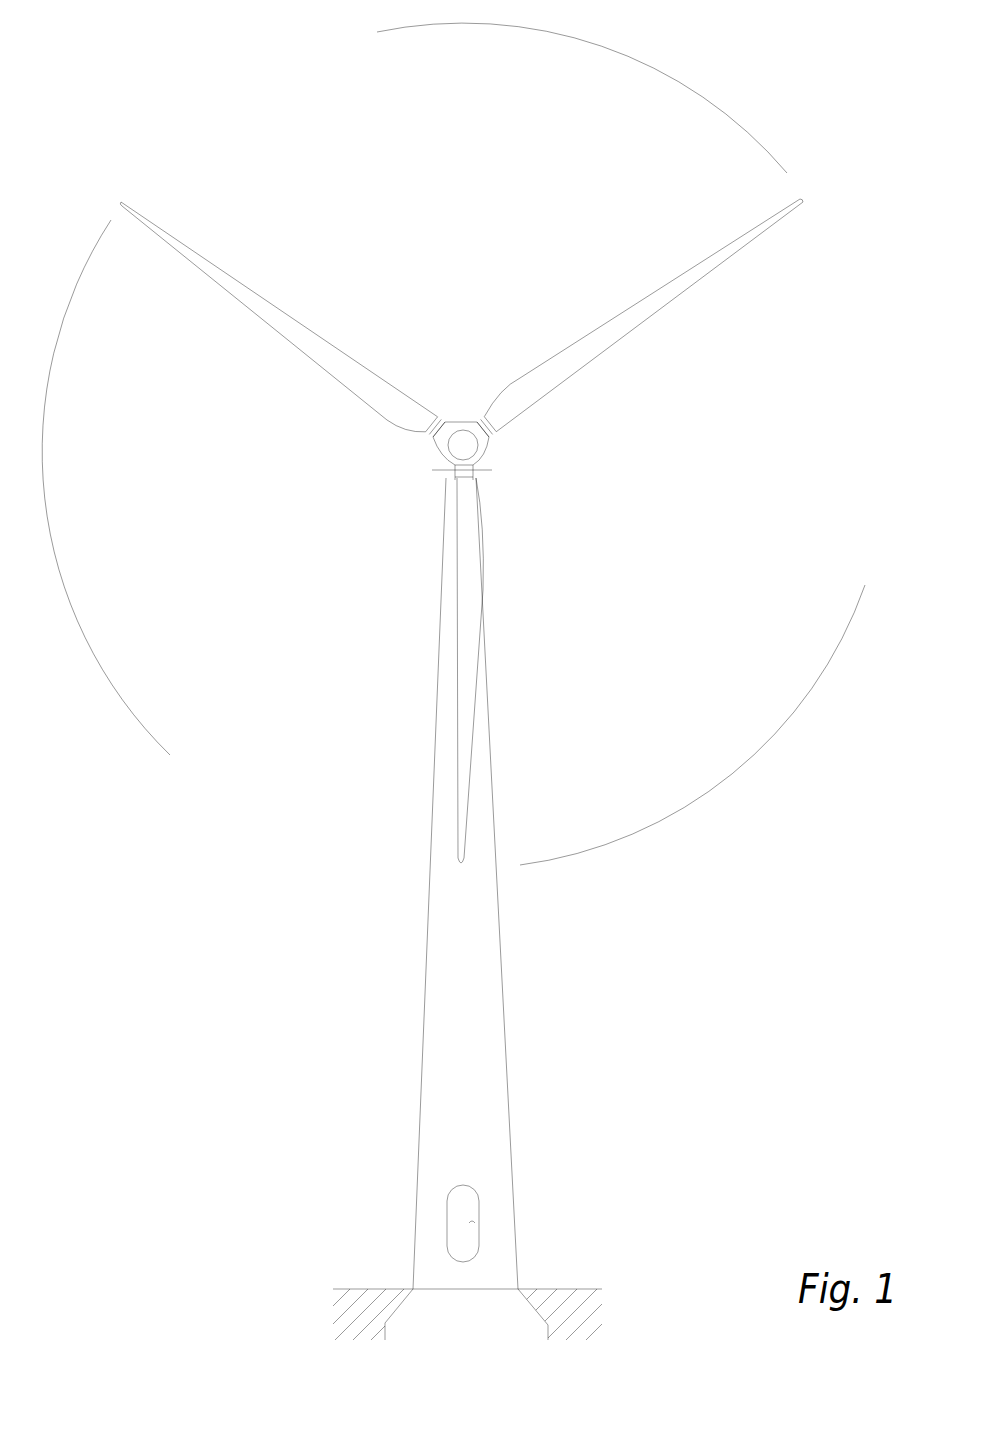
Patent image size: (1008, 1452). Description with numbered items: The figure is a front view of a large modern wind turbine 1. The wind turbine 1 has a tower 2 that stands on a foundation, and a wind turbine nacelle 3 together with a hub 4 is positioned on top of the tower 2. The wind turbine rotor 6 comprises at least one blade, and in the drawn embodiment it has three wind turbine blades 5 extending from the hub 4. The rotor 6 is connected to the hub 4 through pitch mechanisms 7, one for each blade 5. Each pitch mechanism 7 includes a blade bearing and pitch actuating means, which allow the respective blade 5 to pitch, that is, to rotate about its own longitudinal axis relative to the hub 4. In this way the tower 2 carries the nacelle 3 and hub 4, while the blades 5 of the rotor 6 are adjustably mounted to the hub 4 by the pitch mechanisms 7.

The wind turbine 1 is at (392, 1101).
The tower 2 is at (495, 965).
The wind turbine nacelle 3 is at (492, 468).
The hub 4 is at (462, 432).
The wind turbine blades 5 is at (465, 711).
The wind turbine rotor 6 is at (753, 712).
The pitch mechanisms 7 is at (445, 446).